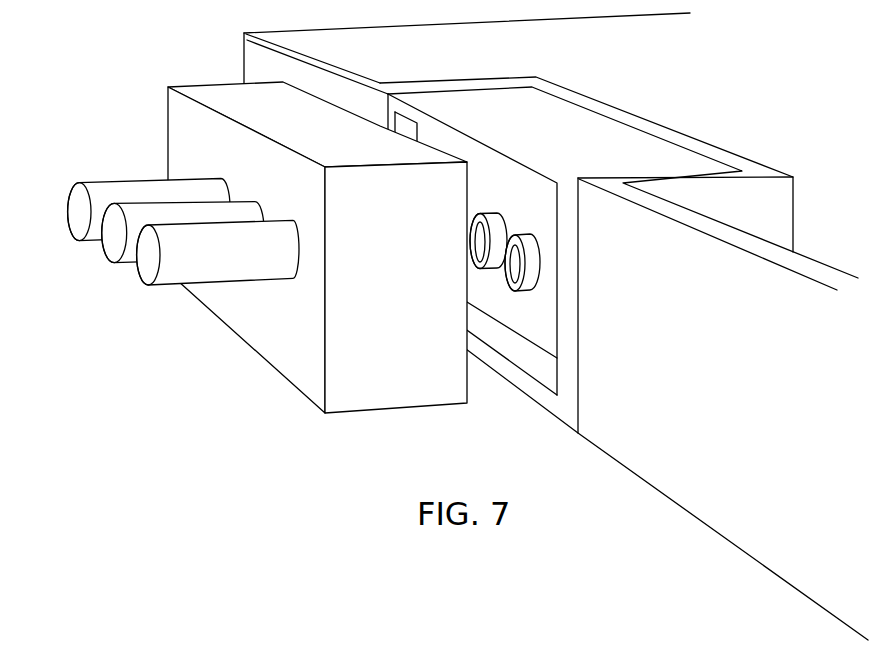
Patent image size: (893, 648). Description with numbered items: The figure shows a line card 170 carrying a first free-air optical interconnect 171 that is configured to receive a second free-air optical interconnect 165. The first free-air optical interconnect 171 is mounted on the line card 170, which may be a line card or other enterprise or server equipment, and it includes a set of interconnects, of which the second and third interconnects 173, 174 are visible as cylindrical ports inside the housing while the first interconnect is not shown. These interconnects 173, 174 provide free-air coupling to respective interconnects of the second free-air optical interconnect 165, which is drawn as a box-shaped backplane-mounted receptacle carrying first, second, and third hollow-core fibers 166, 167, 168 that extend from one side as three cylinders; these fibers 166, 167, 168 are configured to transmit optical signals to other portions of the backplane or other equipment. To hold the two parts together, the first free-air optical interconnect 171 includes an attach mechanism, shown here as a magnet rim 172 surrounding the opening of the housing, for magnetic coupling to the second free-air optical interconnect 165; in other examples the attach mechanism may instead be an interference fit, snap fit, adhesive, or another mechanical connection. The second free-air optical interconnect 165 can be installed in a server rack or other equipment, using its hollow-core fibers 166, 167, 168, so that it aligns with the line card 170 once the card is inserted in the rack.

The second free-air optical interconnect 165 is at (202, 84).
The first hollow-core fiber 166 is at (74, 235).
The second hollow-core fiber 167 is at (110, 256).
The third hollow-core fiber 168 is at (140, 277).
The line card 170 is at (820, 262).
The first free-air optical interconnect 171 is at (615, 135).
The magnet rim 172 is at (490, 150).
The second interconnect 173 is at (472, 252).
The third interconnect 174 is at (507, 275).